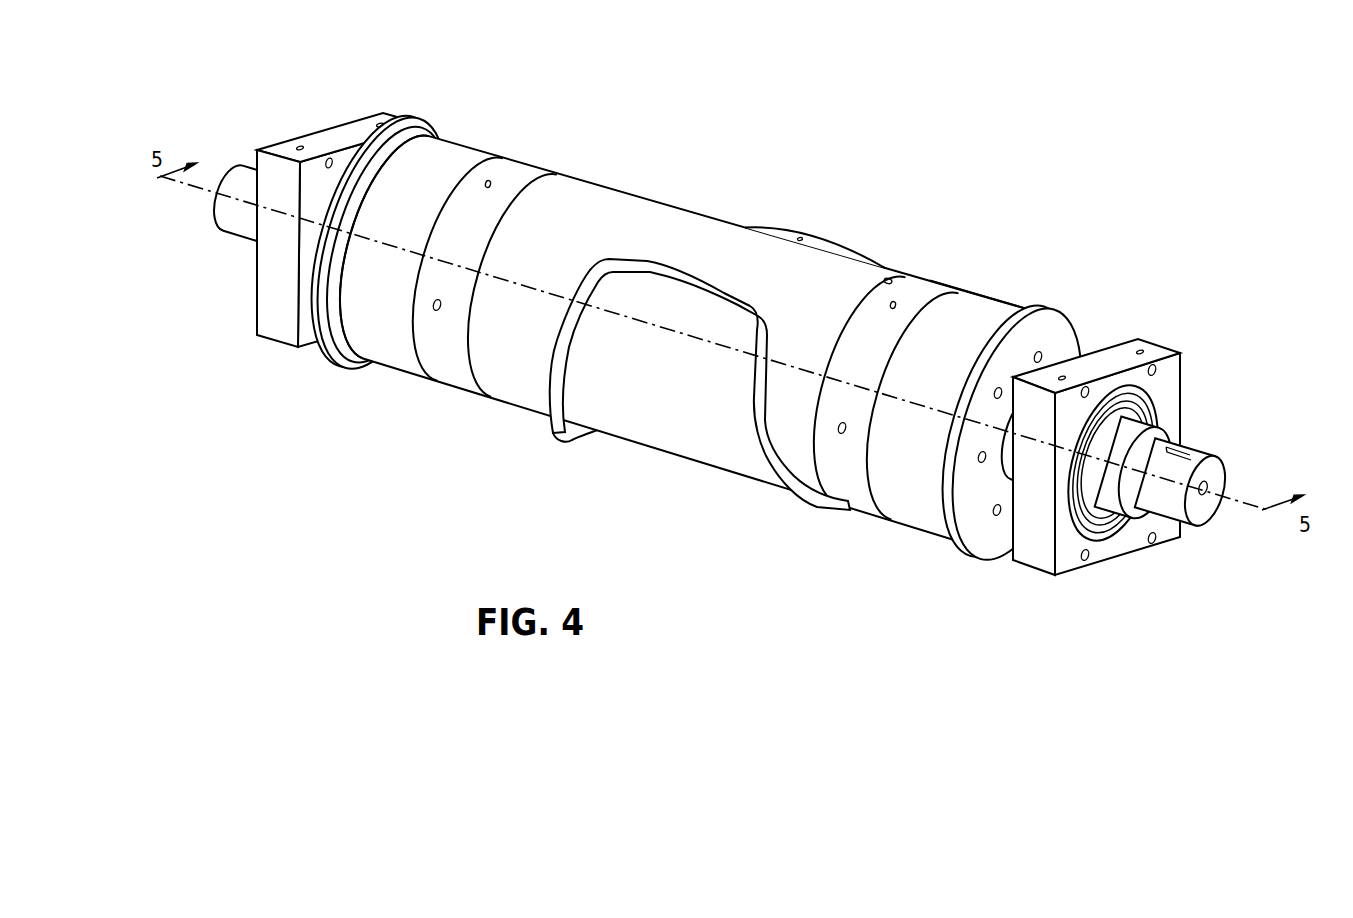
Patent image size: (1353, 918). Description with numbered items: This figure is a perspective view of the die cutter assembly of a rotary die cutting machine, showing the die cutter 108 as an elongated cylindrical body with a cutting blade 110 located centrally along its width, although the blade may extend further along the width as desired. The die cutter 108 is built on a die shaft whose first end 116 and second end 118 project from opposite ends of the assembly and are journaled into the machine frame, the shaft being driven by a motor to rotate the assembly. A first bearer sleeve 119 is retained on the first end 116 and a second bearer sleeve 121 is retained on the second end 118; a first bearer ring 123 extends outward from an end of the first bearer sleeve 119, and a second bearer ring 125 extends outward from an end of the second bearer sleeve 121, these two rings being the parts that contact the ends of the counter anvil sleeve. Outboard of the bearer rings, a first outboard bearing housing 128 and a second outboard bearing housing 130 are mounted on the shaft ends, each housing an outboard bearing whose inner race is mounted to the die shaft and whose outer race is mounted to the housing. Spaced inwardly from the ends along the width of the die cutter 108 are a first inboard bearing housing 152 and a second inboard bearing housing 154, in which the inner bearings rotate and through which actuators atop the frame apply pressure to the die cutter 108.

The die cutter 108 is at (585, 233).
The cutting blade 110 is at (656, 262).
The first end 116 is at (1102, 466).
The second end 118 is at (310, 223).
The first bearer sleeve 119 is at (982, 313).
The second bearer sleeve 121 is at (457, 153).
The first bearer ring 123 is at (1034, 312).
The second bearer ring 125 is at (405, 117).
The first outboard bearing housing 128 is at (1120, 357).
The second outboard bearing housing 130 is at (340, 134).
The first inboard bearing housing 152 is at (926, 300).
The second inboard bearing housing 154 is at (517, 174).